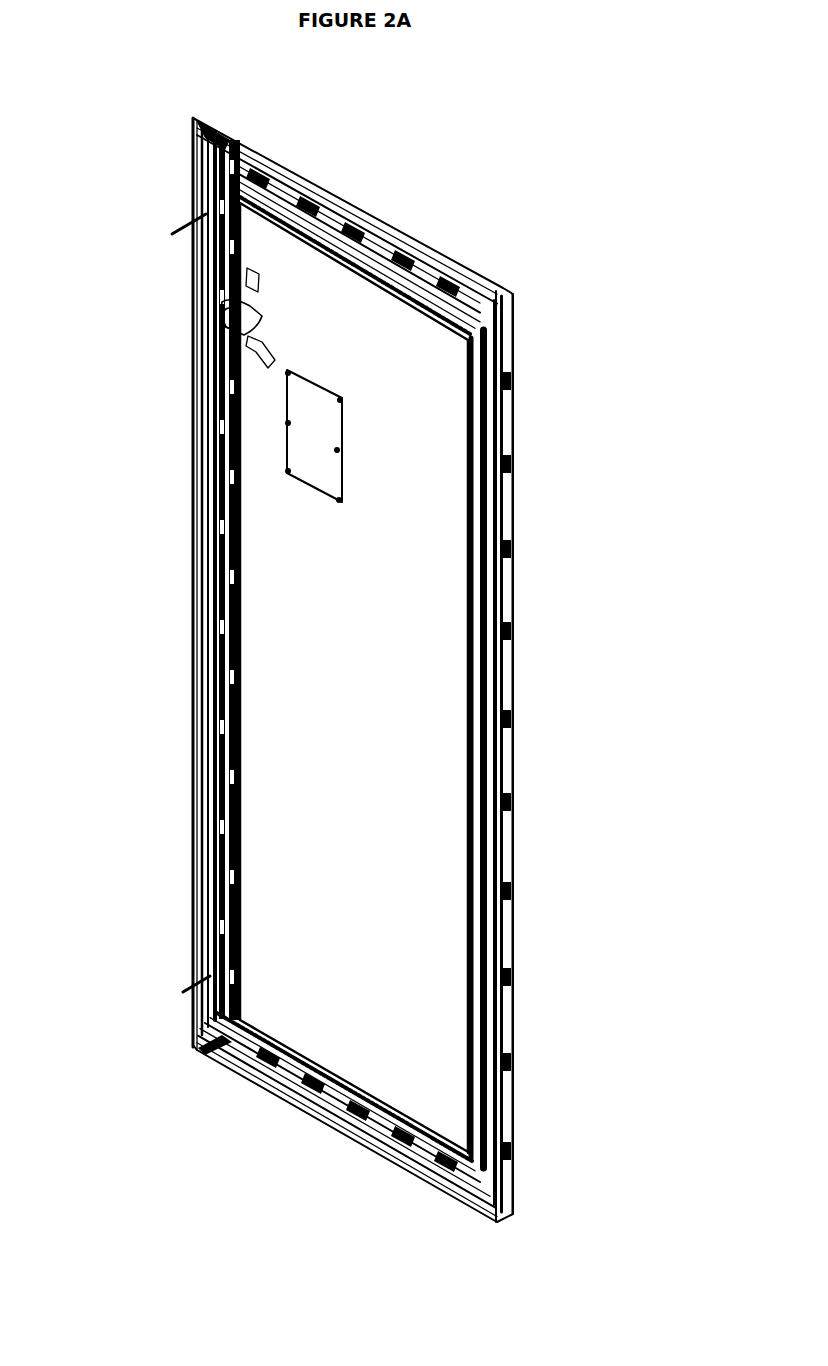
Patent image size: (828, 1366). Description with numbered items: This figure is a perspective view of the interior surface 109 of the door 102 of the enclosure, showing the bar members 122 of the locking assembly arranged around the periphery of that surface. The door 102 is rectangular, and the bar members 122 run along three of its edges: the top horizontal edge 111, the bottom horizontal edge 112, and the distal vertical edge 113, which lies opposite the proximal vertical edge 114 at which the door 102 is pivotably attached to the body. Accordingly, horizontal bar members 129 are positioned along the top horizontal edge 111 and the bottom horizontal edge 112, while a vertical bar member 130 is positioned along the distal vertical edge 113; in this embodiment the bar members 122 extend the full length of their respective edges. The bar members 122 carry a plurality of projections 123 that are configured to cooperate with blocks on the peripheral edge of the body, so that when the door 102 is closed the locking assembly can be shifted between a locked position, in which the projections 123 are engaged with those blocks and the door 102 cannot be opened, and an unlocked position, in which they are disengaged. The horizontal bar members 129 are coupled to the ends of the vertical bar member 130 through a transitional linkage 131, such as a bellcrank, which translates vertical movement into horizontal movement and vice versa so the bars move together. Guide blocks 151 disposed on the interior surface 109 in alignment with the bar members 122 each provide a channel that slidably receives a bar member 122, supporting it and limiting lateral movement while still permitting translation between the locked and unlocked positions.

The door 102 is at (573, 335).
The interior surface 109 is at (372, 708).
The top horizontal edge 111 is at (413, 237).
The bottom horizontal edge 112 is at (350, 1134).
The distal vertical edge 113 is at (193, 793).
The proximal vertical edge 114 is at (507, 677).
The bar members 122 is at (188, 350).
The projections 123 is at (282, 170).
The horizontal bar members 129 is at (343, 213).
The vertical bar member 130 is at (205, 653).
The transitional linkage 131 is at (230, 138).
The guide blocks 151 is at (370, 220).